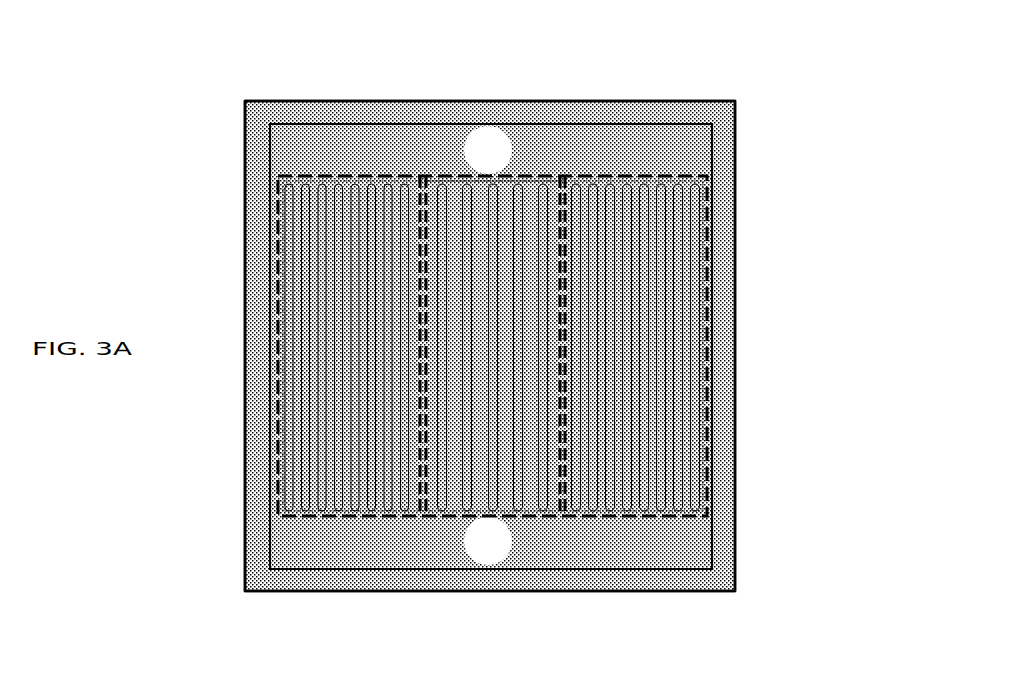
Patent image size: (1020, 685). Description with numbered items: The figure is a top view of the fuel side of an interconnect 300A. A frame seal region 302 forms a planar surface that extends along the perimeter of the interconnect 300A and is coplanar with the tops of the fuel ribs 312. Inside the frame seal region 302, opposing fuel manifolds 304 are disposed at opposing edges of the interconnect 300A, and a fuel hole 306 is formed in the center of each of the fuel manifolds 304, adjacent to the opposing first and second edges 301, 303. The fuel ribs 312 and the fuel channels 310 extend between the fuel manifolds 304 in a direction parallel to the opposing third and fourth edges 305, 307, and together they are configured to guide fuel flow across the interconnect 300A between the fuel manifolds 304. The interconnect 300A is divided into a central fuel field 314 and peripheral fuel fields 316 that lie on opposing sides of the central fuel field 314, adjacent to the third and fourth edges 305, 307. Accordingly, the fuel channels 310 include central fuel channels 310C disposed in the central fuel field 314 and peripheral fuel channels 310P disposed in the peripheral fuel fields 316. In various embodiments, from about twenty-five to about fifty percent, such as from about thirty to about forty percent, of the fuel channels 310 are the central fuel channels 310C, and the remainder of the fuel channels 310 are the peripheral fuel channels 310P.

The interconnect 300A is at (210, 73).
The first edge 301 is at (483, 91).
The frame seal region 302 is at (728, 197).
The second edge 303 is at (482, 585).
The fuel manifolds 304 is at (677, 138).
The third edge 305 is at (238, 340).
The fuel holes 306 is at (465, 130).
The fourth edge 307 is at (729, 343).
The fuel channels 310 is at (848, 408).
The central fuel channels 310C is at (497, 465).
The peripheral fuel channels 310P is at (633, 481).
The fuel ribs 312 is at (507, 440).
The central fuel field 314 is at (556, 333).
The peripheral fuel fields 316 is at (268, 333).